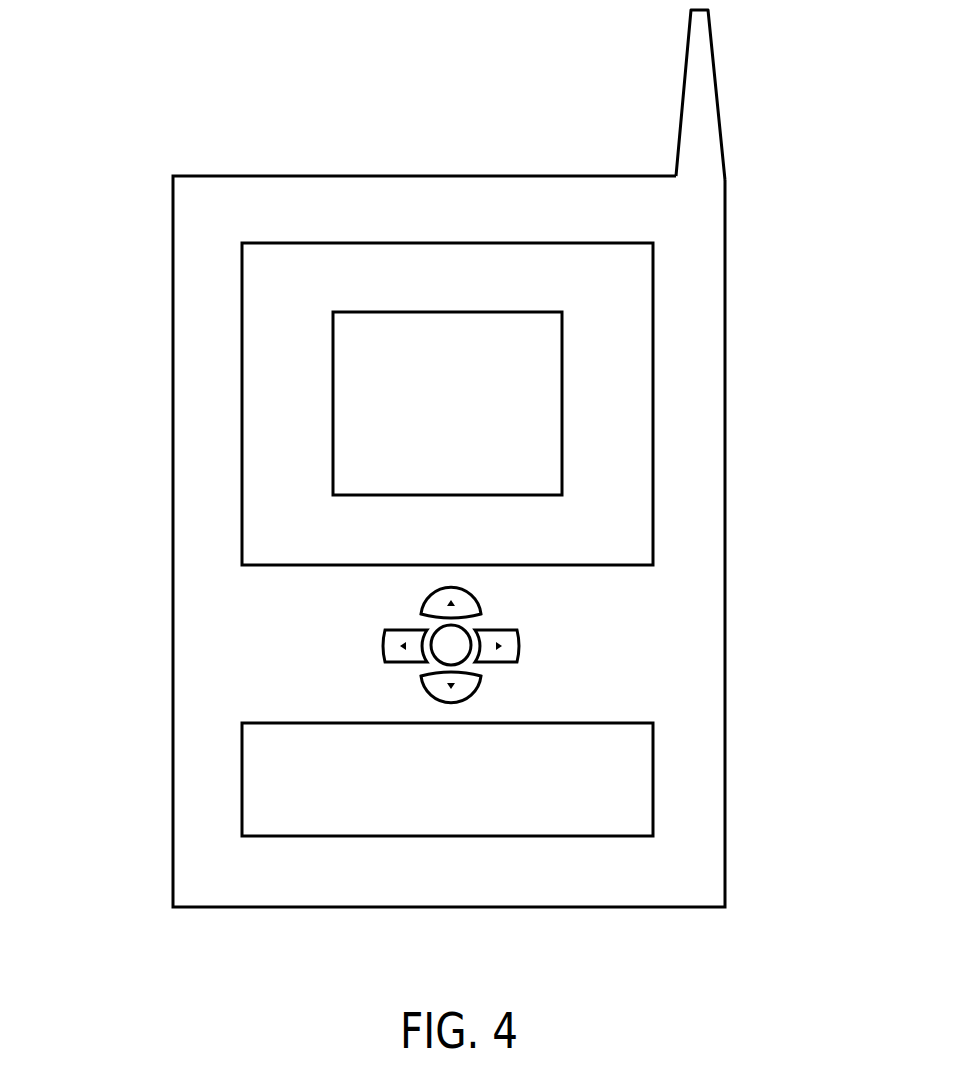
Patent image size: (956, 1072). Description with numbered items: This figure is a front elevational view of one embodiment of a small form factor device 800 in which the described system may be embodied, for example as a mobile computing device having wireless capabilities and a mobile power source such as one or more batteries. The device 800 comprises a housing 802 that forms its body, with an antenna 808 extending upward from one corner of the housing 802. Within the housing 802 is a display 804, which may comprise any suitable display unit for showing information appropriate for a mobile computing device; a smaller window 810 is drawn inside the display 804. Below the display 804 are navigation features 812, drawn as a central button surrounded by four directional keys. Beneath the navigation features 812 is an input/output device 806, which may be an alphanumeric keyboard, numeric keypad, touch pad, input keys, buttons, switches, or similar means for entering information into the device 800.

The small form factor device 800 is at (431, 458).
The housing 802 is at (173, 633).
The display 804 is at (653, 302).
The input/output (I/O) device 806 is at (653, 780).
The antenna 808 is at (683, 92).
The display window 810 is at (448, 312).
The navigation features 812 is at (562, 648).